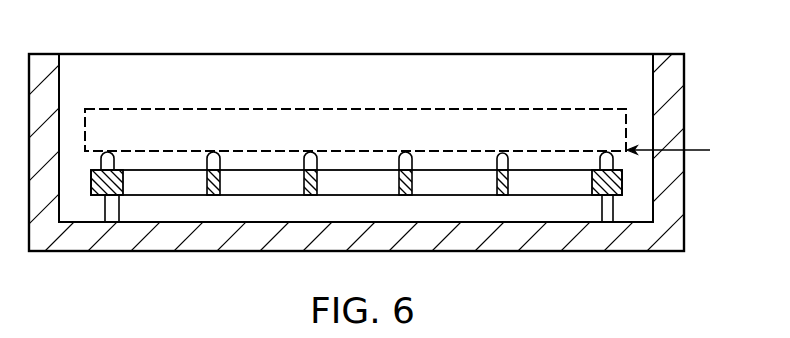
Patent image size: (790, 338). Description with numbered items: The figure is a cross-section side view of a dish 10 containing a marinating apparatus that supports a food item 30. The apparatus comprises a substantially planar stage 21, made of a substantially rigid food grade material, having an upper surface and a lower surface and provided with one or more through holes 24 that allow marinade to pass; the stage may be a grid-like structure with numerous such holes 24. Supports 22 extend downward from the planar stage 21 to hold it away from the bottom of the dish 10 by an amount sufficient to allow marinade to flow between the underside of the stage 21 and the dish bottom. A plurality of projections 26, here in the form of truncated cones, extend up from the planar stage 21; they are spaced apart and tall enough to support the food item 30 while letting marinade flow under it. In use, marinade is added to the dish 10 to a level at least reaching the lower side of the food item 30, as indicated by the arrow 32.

The dish 10 is at (518, 53).
The food item 30 is at (338, 108).
The arrow 32 is at (682, 151).
The through holes 24 is at (182, 196).
The supports 22 is at (108, 212).
The substantially planar stage 21 is at (123, 182).
The projections 26 is at (110, 158).